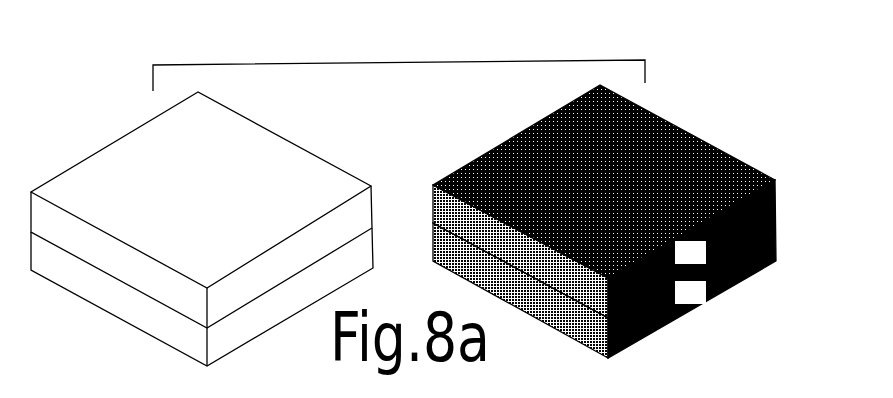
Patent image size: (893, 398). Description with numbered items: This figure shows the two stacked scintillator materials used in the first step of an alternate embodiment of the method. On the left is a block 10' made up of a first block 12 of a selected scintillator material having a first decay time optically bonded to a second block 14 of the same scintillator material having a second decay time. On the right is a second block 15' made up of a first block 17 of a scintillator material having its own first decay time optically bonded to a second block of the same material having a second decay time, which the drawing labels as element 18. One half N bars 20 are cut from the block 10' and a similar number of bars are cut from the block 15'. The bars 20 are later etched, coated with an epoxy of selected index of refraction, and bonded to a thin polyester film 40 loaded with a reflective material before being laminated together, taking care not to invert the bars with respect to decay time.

The block 10' is at (230, 228).
The first block 12 is at (353, 203).
The second block 14 is at (341, 249).
The block 15' is at (610, 238).
The first block 17 is at (542, 318).
The second layer B2 18 is at (572, 330).
The bars 20 is at (316, 394).
The polyester film 40 is at (298, 394).